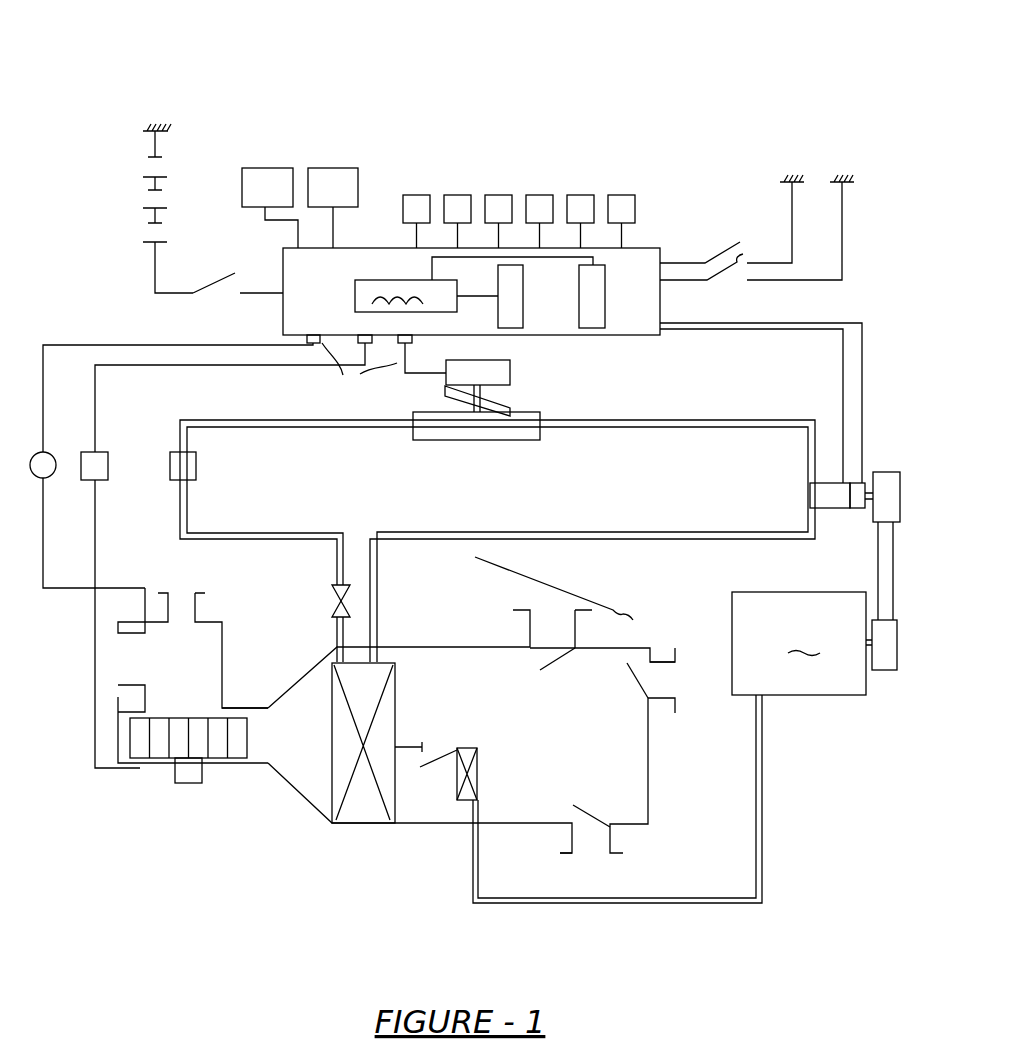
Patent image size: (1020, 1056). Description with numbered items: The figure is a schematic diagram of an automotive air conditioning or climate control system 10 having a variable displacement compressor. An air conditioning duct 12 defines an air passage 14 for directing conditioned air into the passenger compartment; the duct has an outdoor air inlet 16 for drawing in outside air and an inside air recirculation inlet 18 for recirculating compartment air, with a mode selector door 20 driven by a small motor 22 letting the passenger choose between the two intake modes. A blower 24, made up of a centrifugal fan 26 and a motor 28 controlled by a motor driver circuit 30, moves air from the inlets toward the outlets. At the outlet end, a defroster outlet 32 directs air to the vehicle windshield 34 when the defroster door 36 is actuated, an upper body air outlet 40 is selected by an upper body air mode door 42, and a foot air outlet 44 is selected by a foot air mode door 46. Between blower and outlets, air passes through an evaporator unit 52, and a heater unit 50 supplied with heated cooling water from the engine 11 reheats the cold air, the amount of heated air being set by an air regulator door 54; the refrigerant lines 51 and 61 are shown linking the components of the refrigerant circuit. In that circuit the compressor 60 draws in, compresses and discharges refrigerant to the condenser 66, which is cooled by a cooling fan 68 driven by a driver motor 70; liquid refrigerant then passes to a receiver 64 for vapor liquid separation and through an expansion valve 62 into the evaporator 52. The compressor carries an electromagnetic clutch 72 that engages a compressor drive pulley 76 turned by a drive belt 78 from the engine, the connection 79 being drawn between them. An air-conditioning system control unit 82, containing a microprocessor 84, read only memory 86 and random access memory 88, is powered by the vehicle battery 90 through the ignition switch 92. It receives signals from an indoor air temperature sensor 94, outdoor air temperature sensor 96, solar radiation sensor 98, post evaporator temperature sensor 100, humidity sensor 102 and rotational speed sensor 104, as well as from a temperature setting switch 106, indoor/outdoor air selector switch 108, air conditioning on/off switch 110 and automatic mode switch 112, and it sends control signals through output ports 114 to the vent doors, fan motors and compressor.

The automotive air conditioning system 10 is at (640, 46).
The engine 11 is at (799, 643).
The air conditioning duct 12 is at (410, 826).
The air passage 14 is at (532, 760).
The outdoor air inlet 16 is at (190, 588).
The inside air recirculation inlet 18 is at (116, 657).
The mode selector door 20 is at (150, 630).
The small motor 22 is at (50, 478).
The blower 24 is at (229, 780).
The centrifugal fan 26 is at (142, 750).
The motor 28 is at (188, 782).
The motor driver circuit 30 is at (100, 457).
The defroster outlet 32 is at (548, 615).
The vehicle windshield 34 is at (558, 585).
The defroster door 36 is at (552, 667).
The upper body air outlet 40 is at (678, 676).
The upper body air mode door 42 is at (652, 690).
The foot air outlet 44 is at (592, 850).
The foot air mode door 46 is at (592, 810).
The heater unit 50 is at (462, 800).
The EGR pipe 51 is at (768, 798).
The evaporator unit 52 is at (348, 815).
The air regulator door 54 is at (437, 752).
The compressor 60 is at (835, 500).
The intake air conduit 61 is at (316, 428).
The expansion valve 62 is at (333, 590).
The receiver 64 is at (186, 462).
The condenser 66 is at (485, 425).
The cooling fan 68 is at (512, 408).
The driver motor 70 is at (500, 380).
The electromagnetic clutch 72 is at (862, 485).
The compressor drive pulley 76 is at (888, 480).
The drive belt 78 is at (878, 575).
The exhaust sensor 79 is at (887, 662).
The air-conditioning system control unit 82 is at (642, 248).
The microprocessor 84 is at (362, 306).
The read only memory 86 is at (606, 318).
The random access memory 88 is at (523, 318).
The vehicle battery 90 is at (190, 141).
The ignition switch 92 is at (205, 297).
The indoor air temperature sensor 94 is at (413, 200).
The outdoor air temperature sensor 96 is at (455, 198).
The solar radiation sensor 98 is at (495, 205).
The post evaporator temperature sensor 100 is at (535, 203).
The humidity sensor 102 is at (578, 203).
The rotational speed sensor 104 is at (617, 203).
The temperature setting switch 106 is at (330, 176).
The indoor/outdoor air selector switch 108 is at (262, 176).
The air conditioning on/off switch 110 is at (718, 250).
The automatic mode switch 112 is at (740, 258).
The output ports 114 is at (359, 374).